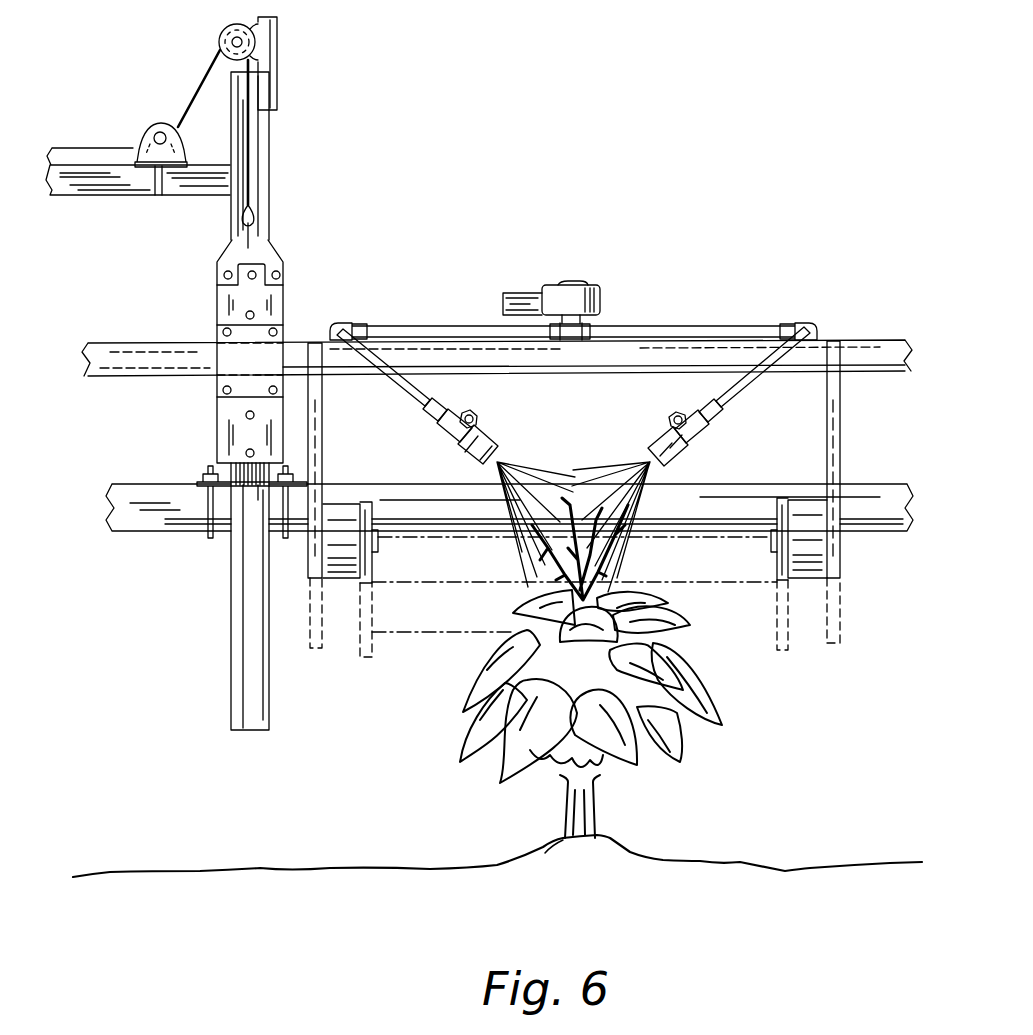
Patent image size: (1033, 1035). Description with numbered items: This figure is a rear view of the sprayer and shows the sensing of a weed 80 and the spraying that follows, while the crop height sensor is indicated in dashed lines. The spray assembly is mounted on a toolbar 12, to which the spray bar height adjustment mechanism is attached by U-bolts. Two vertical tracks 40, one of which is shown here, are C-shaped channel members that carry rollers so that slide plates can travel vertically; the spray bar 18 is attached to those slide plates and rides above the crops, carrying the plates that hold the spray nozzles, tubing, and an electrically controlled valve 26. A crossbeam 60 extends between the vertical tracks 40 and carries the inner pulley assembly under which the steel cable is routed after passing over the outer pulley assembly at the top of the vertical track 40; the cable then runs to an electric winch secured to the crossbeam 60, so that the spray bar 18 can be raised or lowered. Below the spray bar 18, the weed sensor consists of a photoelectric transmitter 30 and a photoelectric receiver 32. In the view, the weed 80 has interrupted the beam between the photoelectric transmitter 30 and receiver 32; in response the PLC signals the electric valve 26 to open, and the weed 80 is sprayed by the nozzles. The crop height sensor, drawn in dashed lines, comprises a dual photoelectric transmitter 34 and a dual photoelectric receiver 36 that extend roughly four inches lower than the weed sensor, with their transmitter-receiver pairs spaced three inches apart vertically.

The toolbar 12 is at (890, 482).
The spray bar 18 is at (872, 341).
The electrically controlled valve 26 is at (570, 283).
The photoelectric transmitter 30 is at (345, 490).
The photoelectric receiver 32 is at (813, 482).
The dual photoelectric transmitter 34 is at (347, 655).
The dual photoelectric receiver 36 is at (813, 650).
The vertical track 40 is at (278, 203).
The crossbeam 60 is at (102, 198).
The weed 80 is at (620, 547).